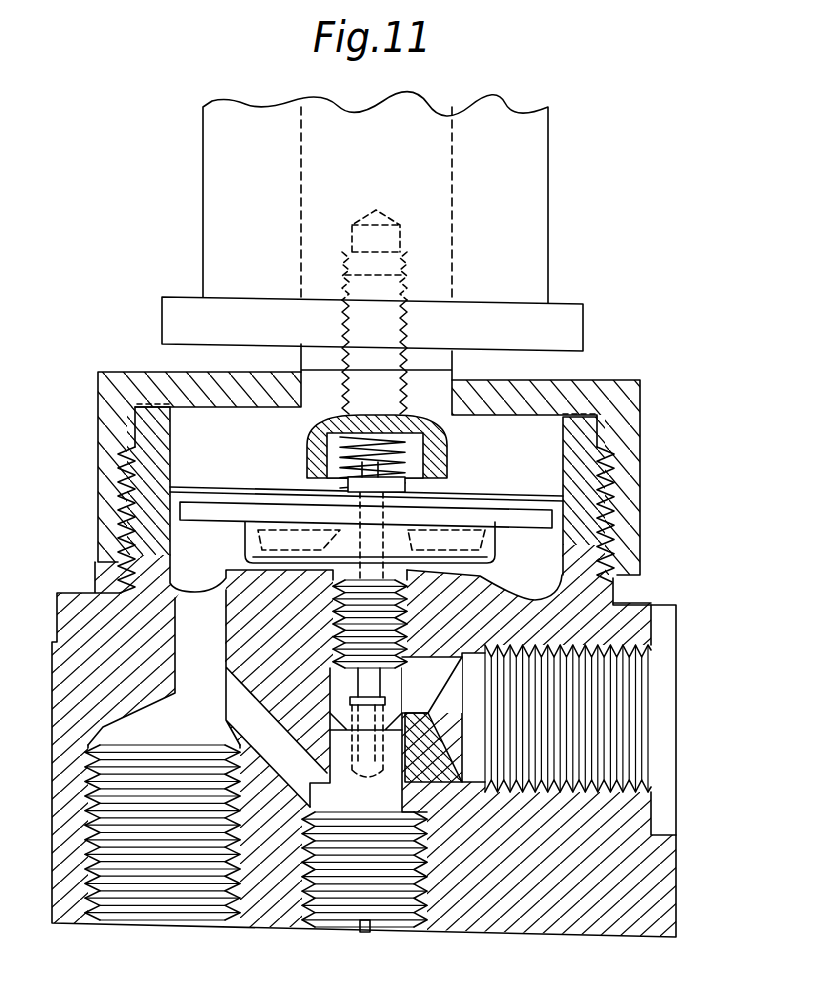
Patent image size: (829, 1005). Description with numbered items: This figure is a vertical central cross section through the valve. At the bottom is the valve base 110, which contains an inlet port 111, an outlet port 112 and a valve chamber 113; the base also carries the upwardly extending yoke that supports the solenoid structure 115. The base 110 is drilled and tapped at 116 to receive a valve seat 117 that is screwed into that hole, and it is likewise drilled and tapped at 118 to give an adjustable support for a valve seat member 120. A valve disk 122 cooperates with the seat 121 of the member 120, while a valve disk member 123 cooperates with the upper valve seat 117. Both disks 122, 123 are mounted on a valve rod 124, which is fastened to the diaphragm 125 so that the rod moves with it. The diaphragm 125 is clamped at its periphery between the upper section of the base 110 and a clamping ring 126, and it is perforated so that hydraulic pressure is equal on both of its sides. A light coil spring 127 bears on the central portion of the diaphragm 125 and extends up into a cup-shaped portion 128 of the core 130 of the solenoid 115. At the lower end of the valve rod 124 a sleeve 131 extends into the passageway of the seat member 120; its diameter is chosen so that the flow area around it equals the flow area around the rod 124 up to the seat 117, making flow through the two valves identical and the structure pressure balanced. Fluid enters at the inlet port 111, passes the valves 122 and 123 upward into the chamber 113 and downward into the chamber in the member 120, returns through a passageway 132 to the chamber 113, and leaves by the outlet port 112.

The valve base 110 is at (556, 924).
The inlet port 111 is at (655, 707).
The outlet port 112 is at (140, 913).
The valve chamber 113 is at (551, 557).
The solenoid structure 115 is at (540, 262).
The tapped hole 116 is at (478, 580).
The valve seat 117 is at (490, 540).
The tapped hole 118 is at (302, 905).
The valve seat member 120 is at (343, 807).
The seat 121 is at (400, 716).
The valve disk 122 is at (388, 701).
The valve disk member 123 is at (228, 516).
The valve rod 124 is at (300, 482).
The diaphragm 125 is at (205, 487).
The clamping ring 126 is at (130, 448).
The light coil spring 127 is at (441, 443).
The cup-shaped portion 128 is at (413, 463).
The core 130 is at (432, 392).
The sleeve 131 is at (438, 935).
The passageway 132 is at (243, 722).